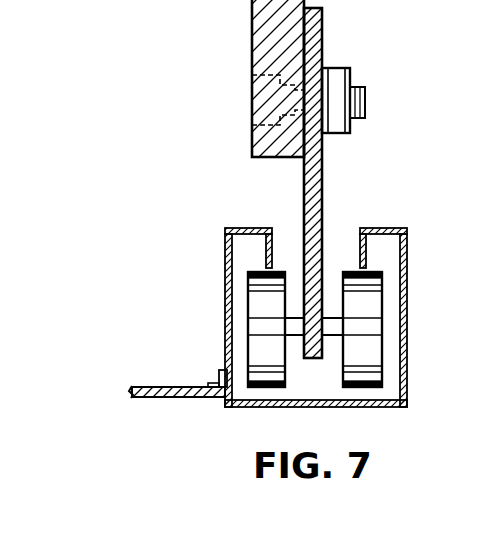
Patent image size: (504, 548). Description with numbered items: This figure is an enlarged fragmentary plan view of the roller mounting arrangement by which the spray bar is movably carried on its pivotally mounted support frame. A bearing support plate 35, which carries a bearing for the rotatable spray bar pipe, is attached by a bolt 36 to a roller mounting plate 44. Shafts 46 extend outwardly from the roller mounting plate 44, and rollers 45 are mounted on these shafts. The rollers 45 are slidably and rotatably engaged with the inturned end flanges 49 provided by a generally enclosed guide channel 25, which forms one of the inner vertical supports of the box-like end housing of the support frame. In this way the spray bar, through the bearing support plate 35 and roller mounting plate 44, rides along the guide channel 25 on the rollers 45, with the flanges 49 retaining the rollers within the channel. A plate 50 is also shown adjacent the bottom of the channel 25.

The inner roller guide channel 25 is at (349, 303).
The bearing support plate 35 is at (260, 50).
The bolt 36 is at (347, 70).
The roller mounting plate 44 is at (310, 193).
The roller 45 is at (365, 307).
The shaft 46 is at (333, 327).
The inturned end flange 49 is at (272, 250).
The cover plate 50 is at (224, 407).